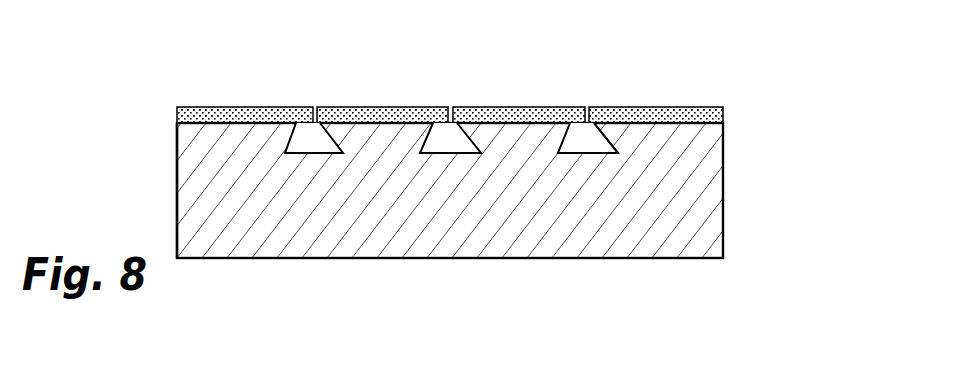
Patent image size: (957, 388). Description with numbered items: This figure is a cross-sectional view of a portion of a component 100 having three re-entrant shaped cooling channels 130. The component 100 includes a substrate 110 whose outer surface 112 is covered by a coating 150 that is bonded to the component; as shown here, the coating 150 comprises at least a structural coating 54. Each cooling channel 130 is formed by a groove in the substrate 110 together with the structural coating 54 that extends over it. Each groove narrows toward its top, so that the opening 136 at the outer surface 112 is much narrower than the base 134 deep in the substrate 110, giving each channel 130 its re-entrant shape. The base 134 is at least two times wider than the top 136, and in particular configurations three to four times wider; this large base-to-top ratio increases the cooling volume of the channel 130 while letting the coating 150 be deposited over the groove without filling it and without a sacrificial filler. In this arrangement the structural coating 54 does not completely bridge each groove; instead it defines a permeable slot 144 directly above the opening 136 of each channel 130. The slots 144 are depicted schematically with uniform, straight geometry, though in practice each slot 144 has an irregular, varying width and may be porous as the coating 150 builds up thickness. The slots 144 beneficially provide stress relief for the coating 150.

The component 100 is at (83, 66).
The substrate 110 is at (703, 200).
The outer surface 112 is at (178, 125).
The cooling channel 130 is at (605, 148).
The base 134 is at (592, 156).
The opening 136 is at (597, 125).
The permeable slot 144 is at (315, 107).
The coating 150 is at (416, 72).
The structural coating 54 is at (215, 113).